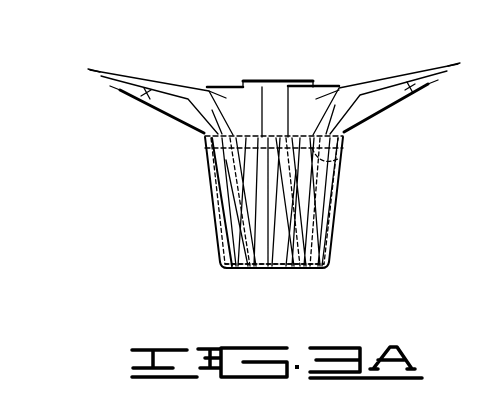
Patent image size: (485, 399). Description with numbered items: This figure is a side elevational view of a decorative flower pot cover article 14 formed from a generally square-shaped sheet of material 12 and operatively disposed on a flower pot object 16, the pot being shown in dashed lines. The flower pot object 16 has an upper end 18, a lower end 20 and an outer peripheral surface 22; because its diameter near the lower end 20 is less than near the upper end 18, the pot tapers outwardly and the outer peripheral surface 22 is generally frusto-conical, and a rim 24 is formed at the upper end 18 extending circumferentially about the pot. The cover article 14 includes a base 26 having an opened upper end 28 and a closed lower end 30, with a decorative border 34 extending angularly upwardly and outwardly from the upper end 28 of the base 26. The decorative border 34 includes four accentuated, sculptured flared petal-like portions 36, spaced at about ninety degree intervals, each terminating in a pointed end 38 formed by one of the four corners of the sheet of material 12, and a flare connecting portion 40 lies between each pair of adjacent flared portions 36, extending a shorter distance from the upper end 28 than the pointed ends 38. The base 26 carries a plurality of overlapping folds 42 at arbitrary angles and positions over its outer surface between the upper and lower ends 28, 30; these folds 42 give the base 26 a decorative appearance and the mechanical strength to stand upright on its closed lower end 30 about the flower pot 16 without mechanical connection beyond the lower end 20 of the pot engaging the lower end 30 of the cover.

The sheet of material 12 is at (361, 97).
The decorative flower pot cover article 14 is at (268, 81).
The flower pot object 16 is at (335, 208).
The upper end 18 is at (247, 136).
The lower end 20 is at (237, 273).
The outer peripheral surface 22 is at (212, 198).
The rim 24 is at (336, 152).
The base 26 is at (220, 242).
The opened upper end 28 is at (204, 139).
The closed lower end 30 is at (227, 272).
The decorative border 34 is at (132, 63).
The flared petal-like portion 36 is at (146, 93).
The pointed end 38 is at (92, 69).
The flare connecting portion 40 is at (275, 107).
The overlapping fold 42 is at (232, 170).